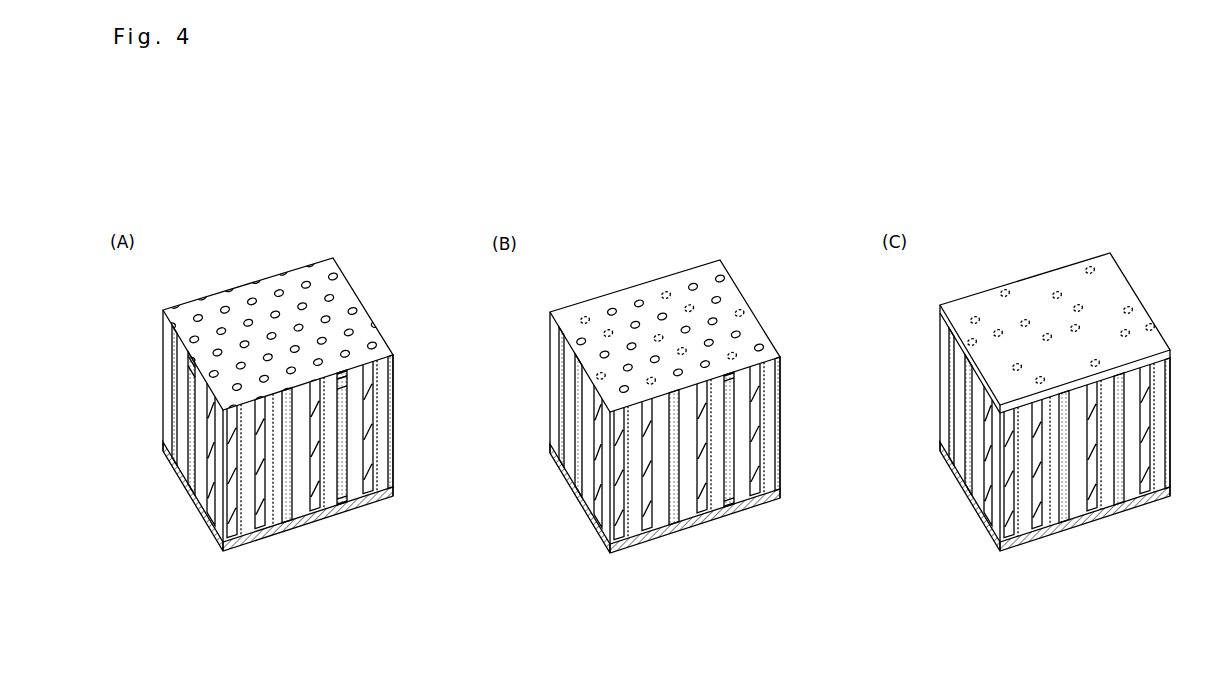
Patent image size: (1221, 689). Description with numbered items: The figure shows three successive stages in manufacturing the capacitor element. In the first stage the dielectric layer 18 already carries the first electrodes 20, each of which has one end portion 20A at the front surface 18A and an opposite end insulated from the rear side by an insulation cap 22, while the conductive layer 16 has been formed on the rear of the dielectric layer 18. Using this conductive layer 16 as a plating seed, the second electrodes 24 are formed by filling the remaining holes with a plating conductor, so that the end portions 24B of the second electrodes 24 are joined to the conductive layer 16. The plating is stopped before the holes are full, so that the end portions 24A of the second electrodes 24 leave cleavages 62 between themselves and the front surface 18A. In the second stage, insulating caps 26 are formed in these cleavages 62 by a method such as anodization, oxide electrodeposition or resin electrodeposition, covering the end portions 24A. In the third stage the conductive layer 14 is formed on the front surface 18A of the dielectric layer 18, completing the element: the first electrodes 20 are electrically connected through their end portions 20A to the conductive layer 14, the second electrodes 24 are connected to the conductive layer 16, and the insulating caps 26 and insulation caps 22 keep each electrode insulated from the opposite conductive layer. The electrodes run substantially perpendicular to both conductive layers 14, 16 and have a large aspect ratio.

In FIG. 4C, the conductive layer 14 is at (968, 302).
In FIG. 4A, the conductive layer 16 is at (387, 502).
In FIG. 4B, the conductive layer 16 is at (770, 500).
In FIG. 4C, the conductive layer 16 is at (942, 458).
In FIG. 4A, the dielectric layer 18 is at (160, 335).
In FIG. 4C, the dielectric layer 18 is at (938, 337).
In FIG. 4A, the front surface of the dielectric layer 18A is at (187, 313).
In FIG. 4B, the front surface of the dielectric layer 18A is at (577, 310).
In FIG. 4A, the first electrode 20 is at (258, 513).
In FIG. 4C, the first electrode 20 is at (1090, 497).
In FIG. 4A, the end portion of the first electrode 20A is at (252, 300).
In FIG. 4B, the end portion of the first electrode 20A is at (720, 277).
In FIG. 4A, the insulation cap 22 is at (273, 530).
In FIG. 4C, the insulation cap 22 is at (1107, 517).
In FIG. 4A, the second electrode 24 is at (342, 437).
In FIG. 4B, the second electrode 24 is at (730, 440).
In FIG. 4C, the second electrode 24 is at (1120, 447).
In FIG. 4A, the end portion of the second electrode 24A is at (343, 377).
In FIG. 4B, the end portion of the second electrode 24A is at (727, 385).
In FIG. 4A, the end portion of the second electrode 24B is at (343, 510).
In FIG. 4B, the end portion of the second electrode 24B is at (728, 510).
In FIG. 4B, the insulating cap 26 is at (737, 330).
In FIG. 4C, the insulating cap 26 is at (1128, 330).
In FIG. 4A, the cleavage 62 is at (193, 363).